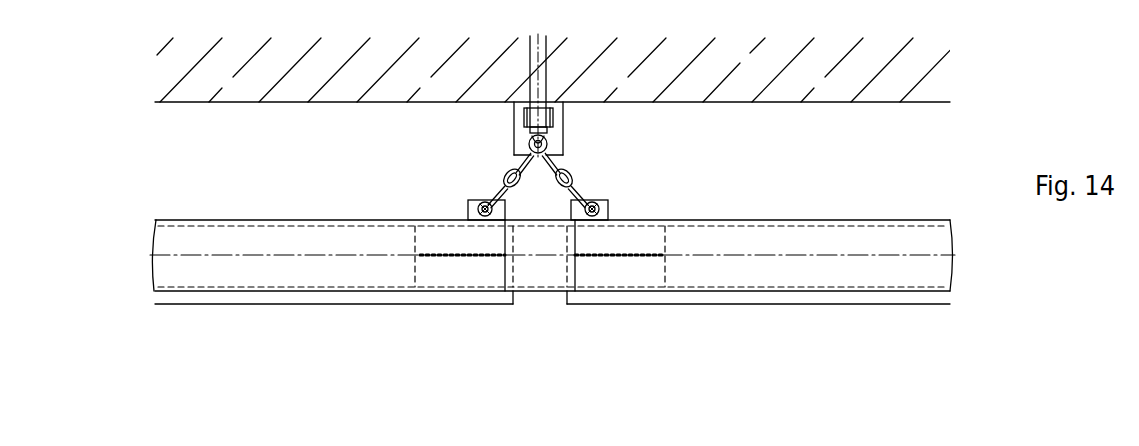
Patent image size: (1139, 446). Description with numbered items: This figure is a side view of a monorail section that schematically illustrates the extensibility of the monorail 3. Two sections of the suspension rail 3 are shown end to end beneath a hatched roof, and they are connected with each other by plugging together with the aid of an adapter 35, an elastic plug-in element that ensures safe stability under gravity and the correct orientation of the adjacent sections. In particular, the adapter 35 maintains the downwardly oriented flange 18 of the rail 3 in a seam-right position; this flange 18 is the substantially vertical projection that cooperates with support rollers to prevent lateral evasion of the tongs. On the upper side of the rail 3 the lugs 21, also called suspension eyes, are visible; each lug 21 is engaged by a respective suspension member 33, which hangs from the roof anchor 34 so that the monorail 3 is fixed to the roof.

The monorail 3 is at (262, 270).
The downwardly oriented flange 18 is at (327, 289).
The lugs 21 is at (480, 204).
The suspension member 33 is at (567, 167).
The roof anchor 34 is at (527, 124).
The adapter 35 is at (538, 275).